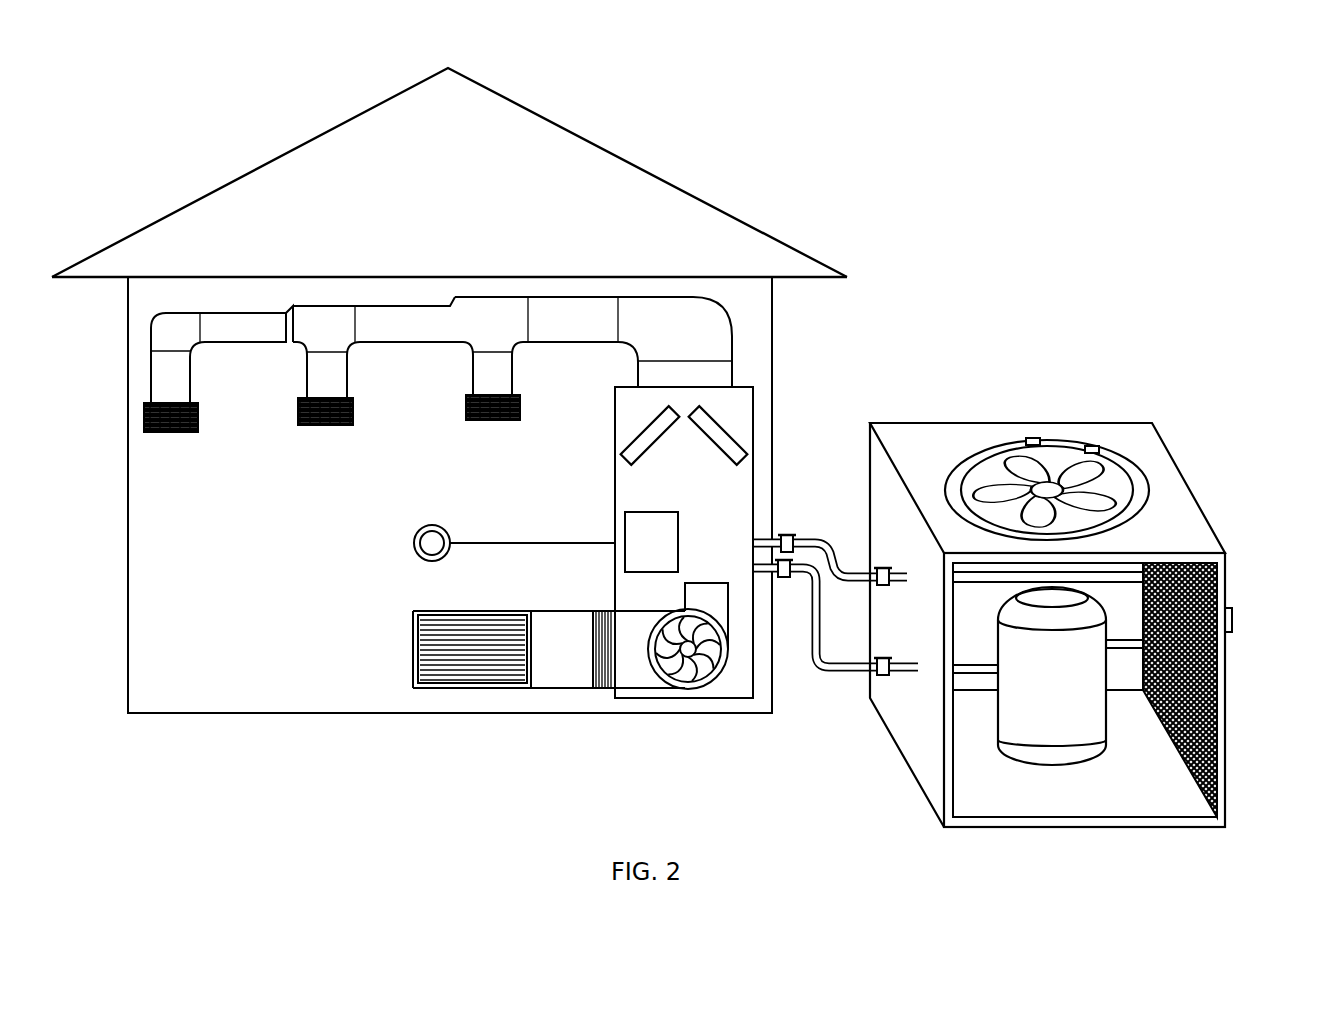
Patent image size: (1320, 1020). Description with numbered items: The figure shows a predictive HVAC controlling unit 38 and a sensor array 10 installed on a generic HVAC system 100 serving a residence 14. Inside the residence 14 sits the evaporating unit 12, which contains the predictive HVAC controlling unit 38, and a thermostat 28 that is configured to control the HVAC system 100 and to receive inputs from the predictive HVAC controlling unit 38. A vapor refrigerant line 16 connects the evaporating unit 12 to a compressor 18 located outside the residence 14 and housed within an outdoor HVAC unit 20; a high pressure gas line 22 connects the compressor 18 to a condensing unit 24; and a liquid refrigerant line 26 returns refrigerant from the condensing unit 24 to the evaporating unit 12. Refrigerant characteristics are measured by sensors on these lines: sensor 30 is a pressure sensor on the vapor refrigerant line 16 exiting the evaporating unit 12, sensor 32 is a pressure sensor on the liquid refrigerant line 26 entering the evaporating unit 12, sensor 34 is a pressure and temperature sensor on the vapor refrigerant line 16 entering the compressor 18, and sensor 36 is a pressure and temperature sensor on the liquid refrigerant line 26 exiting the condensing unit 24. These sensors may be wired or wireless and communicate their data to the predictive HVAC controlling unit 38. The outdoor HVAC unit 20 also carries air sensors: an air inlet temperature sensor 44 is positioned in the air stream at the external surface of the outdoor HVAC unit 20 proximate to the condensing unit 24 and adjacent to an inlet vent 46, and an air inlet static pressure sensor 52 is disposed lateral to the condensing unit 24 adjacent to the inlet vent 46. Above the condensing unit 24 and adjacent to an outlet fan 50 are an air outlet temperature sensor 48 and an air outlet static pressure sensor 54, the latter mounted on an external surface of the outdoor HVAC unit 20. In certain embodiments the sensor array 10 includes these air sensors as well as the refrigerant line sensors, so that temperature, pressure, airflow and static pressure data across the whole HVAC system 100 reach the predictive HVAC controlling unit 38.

The generic HVAC system 100 is at (120, 92).
The residence 14 is at (647, 170).
The evaporating unit 12 is at (754, 412).
The predictive HVAC controlling unit 38 is at (680, 538).
The thermostat 28 is at (437, 525).
The liquid refrigerant line 26 is at (817, 538).
The vapor refrigerant line 16 is at (848, 675).
The sensor 32 is at (787, 532).
The sensor 30 is at (786, 578).
The sensor 36 is at (889, 565).
The sensor 34 is at (889, 657).
The sensor array 10 is at (1031, 623).
The outdoor HVAC unit 20 is at (905, 768).
The condensing unit 24 is at (1220, 660).
The inlet vent 46 is at (1195, 562).
The air inlet temperature sensor 44 is at (1215, 592).
The air inlet static pressure sensor 52 is at (1236, 620).
The high pressure gas line 22 is at (1113, 648).
The compressor 18 is at (1060, 765).
The outlet fan 50 is at (1007, 470).
The air outlet static pressure sensor 54 is at (1036, 438).
The air outlet temperature sensor 48 is at (1094, 446).